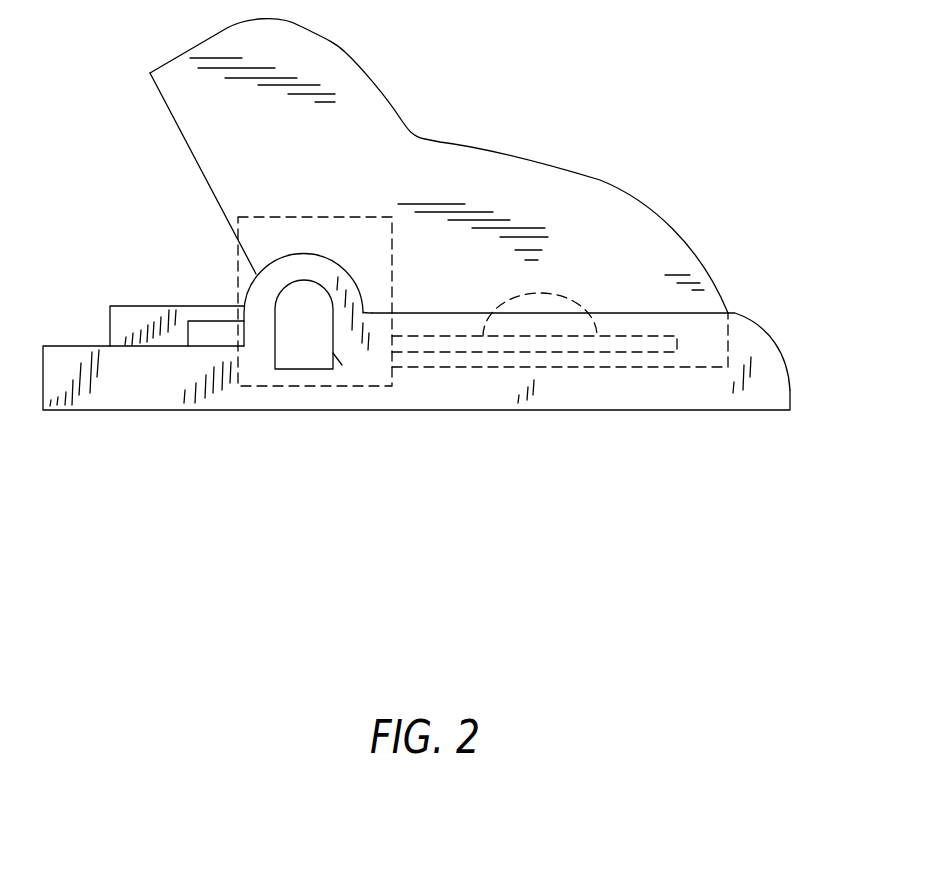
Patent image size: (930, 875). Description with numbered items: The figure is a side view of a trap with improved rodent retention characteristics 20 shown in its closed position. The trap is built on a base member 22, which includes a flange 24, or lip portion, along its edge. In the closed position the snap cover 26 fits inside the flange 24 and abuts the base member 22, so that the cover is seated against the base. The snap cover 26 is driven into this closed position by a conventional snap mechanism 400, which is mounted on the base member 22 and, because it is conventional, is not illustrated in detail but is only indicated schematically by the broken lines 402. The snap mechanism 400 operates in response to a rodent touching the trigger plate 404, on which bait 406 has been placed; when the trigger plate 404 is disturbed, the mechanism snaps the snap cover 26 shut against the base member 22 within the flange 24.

The trap with improved rodent retention characteristics 20 is at (678, 84).
The base member 22 is at (462, 393).
The flange 24 is at (743, 328).
The snap cover 26 is at (483, 170).
The snap mechanism 400 is at (283, 235).
The broken lines 402 is at (237, 283).
The trigger plate 404 is at (617, 335).
The bait 406 is at (553, 287).